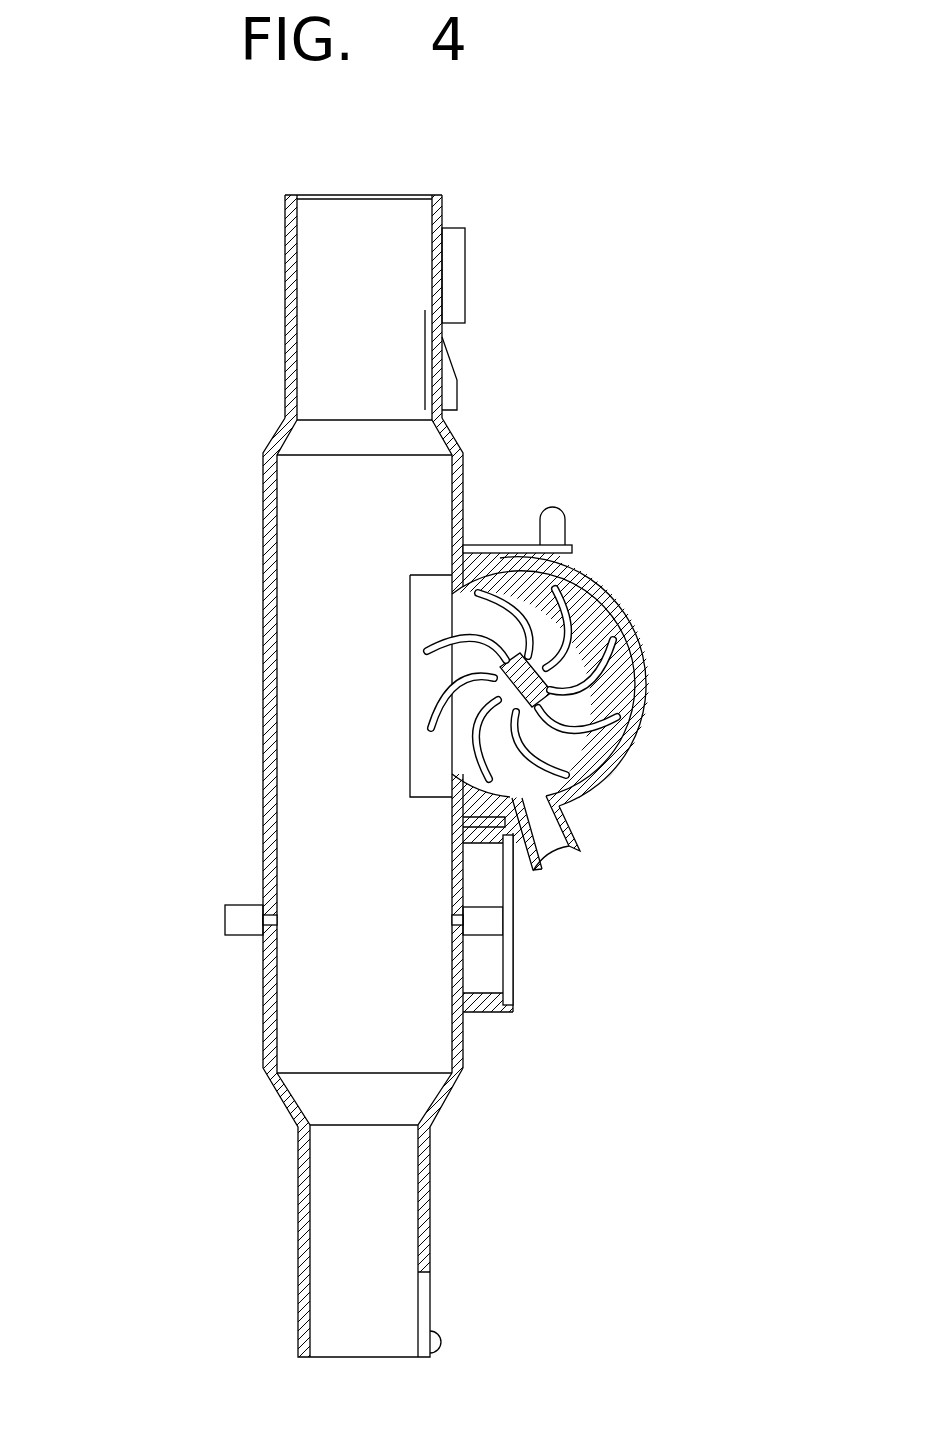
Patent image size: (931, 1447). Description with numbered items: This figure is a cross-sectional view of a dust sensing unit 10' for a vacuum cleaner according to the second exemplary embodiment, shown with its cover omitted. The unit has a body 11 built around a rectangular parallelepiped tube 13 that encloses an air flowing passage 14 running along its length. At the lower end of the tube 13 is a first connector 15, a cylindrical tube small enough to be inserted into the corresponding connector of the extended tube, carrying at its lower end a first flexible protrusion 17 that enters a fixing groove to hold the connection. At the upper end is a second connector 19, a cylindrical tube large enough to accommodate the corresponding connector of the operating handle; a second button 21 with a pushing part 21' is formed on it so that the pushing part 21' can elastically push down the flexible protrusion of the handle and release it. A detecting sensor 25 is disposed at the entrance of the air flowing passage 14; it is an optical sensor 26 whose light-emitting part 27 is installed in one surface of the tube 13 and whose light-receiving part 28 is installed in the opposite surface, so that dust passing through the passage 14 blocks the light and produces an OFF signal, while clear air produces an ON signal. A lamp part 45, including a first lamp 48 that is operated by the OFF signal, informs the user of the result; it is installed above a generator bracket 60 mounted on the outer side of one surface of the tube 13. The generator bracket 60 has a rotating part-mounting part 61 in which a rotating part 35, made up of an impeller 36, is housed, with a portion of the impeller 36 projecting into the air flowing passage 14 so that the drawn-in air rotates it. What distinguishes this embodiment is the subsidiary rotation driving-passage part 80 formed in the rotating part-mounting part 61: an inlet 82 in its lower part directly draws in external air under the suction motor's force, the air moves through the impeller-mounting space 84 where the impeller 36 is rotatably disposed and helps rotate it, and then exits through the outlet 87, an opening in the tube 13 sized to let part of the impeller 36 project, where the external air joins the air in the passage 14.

The dust sensing unit 10' is at (441, 776).
The body 11 is at (262, 706).
The rectangular parallelepiped tube 13 is at (268, 826).
The air flowing passage 14 is at (335, 557).
The first connector 15 is at (296, 1255).
The first flexible protrusion 17 is at (441, 1343).
The second connector 19 is at (285, 318).
The second button 21 is at (483, 360).
The pushing part 21' is at (486, 280).
The detecting sensor 25 is at (508, 920).
The optical sensor 26 is at (138, 940).
The light-emitting part 27 is at (475, 920).
The light-receiving part 28 is at (228, 922).
The rotating part 35 is at (577, 625).
The impeller 36 is at (618, 655).
The lamp part 45 is at (563, 502).
The first lamp 48 is at (552, 507).
The generator bracket 60 is at (625, 595).
The rotating part-mounting part 61 is at (580, 563).
The subsidiary rotation driving-passage part 80 is at (742, 840).
The inlet 82 is at (540, 838).
The impeller-mounting space 84 is at (598, 746).
The outlet 87 is at (560, 800).